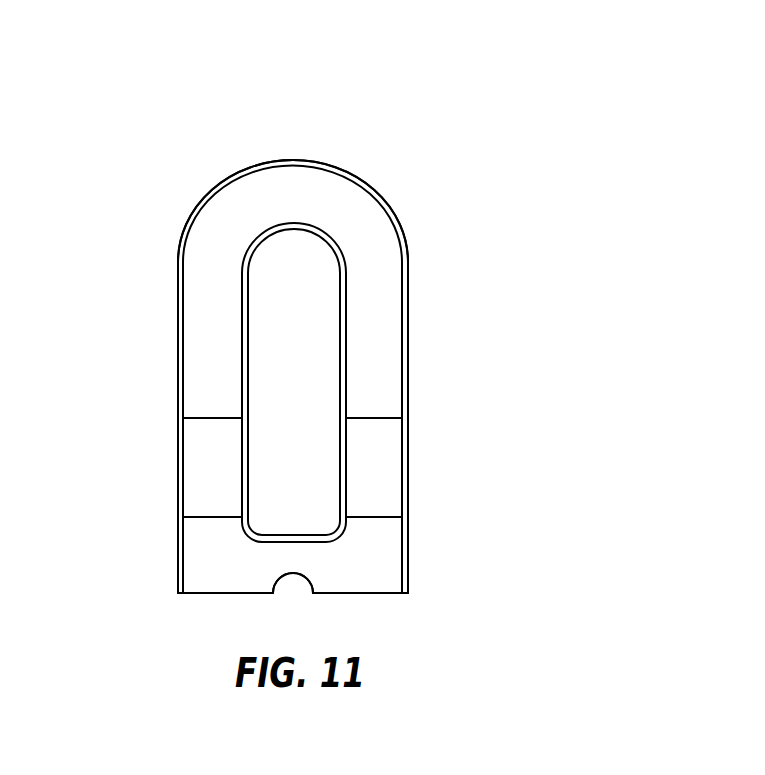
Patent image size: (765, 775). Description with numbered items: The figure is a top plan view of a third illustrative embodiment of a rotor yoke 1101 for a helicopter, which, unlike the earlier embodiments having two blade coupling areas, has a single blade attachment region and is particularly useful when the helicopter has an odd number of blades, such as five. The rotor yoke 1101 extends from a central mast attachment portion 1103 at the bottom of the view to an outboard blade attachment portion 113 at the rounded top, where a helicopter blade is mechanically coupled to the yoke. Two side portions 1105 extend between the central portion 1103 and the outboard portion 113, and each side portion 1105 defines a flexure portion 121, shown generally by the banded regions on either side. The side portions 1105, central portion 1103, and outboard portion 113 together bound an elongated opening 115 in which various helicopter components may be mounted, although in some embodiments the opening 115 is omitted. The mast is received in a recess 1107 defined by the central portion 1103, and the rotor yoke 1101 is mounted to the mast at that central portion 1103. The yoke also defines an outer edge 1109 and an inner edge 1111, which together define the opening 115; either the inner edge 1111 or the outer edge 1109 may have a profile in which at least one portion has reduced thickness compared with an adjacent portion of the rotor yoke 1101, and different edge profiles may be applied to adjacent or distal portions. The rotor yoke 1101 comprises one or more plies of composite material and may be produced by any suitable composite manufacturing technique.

The rotor yoke 1101 is at (174, 144).
The blade attachment portion 113 is at (283, 202).
The outer edge 1109 is at (405, 273).
The inner edge 1111 is at (340, 317).
The side portion 1105 is at (390, 377).
The flexure portion 121 is at (215, 458).
The opening 115 is at (290, 518).
The recess 1107 is at (270, 578).
The mast attachment portion 1103 is at (373, 570).